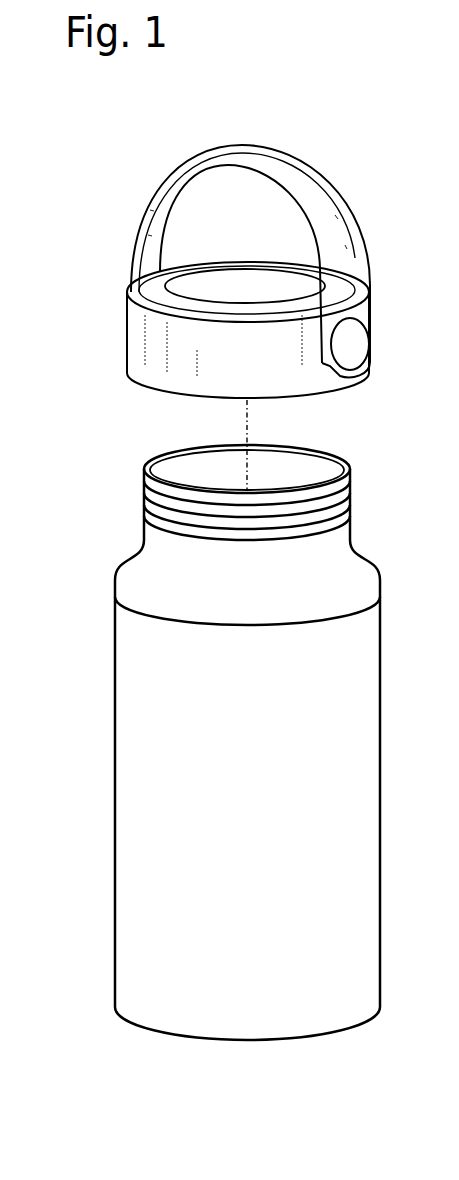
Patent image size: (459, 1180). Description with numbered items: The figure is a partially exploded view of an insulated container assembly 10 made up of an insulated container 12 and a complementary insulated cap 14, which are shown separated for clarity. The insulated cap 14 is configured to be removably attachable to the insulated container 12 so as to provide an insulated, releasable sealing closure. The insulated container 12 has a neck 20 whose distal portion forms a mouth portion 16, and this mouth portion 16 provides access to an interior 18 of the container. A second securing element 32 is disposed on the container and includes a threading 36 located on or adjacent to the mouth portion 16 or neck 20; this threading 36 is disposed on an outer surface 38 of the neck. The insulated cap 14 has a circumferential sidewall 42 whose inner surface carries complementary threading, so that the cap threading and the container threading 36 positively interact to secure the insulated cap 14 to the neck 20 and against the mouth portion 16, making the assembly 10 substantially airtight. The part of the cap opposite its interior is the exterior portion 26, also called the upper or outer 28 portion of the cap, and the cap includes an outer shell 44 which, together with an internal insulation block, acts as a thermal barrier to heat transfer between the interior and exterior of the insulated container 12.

The insulated container assembly 10 is at (68, 397).
The insulated container 12 is at (82, 625).
The insulated cap 14 is at (96, 278).
The mouth portion 16 is at (337, 439).
The interior 18 is at (222, 486).
The neck 20 is at (353, 523).
The exterior portion 26 is at (259, 229).
The upper or outer portion of the insulated cap 28 is at (260, 297).
The second securing element 32 is at (133, 477).
The threading 36 is at (353, 483).
The outer surface of the neck 38 is at (140, 500).
The circumferential sidewall 42 is at (128, 330).
The outer shell 44 is at (372, 310).